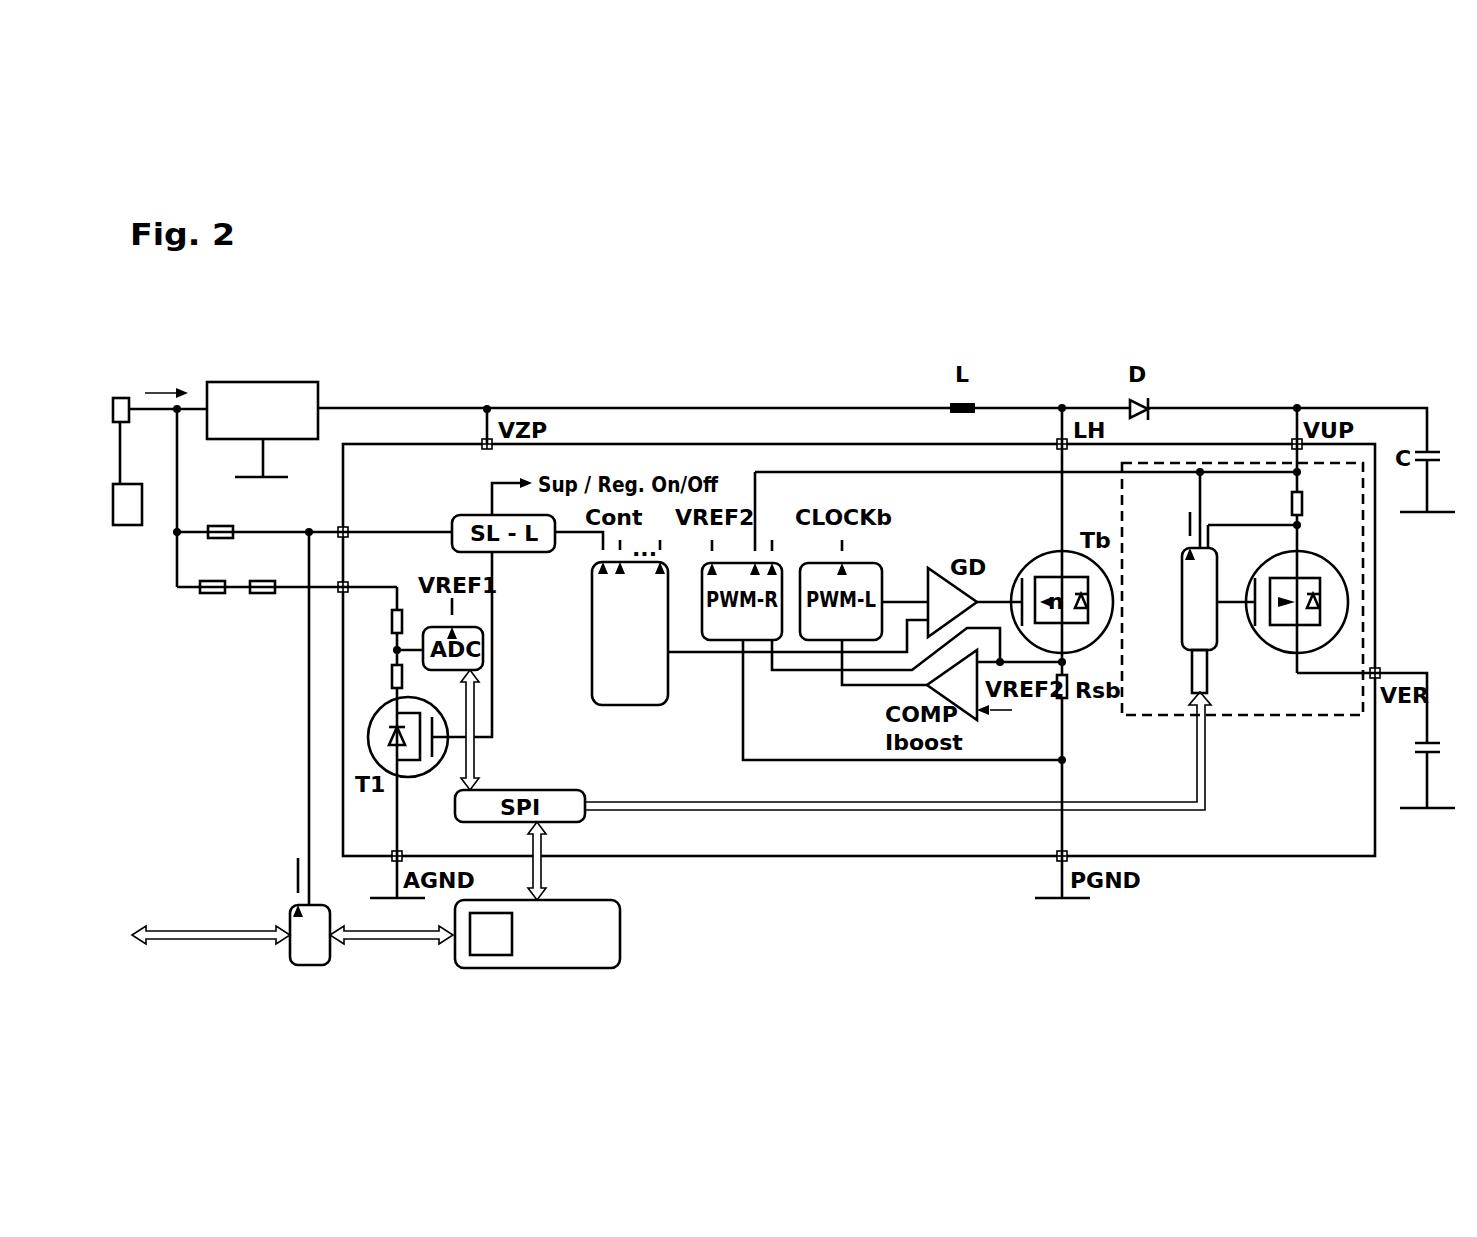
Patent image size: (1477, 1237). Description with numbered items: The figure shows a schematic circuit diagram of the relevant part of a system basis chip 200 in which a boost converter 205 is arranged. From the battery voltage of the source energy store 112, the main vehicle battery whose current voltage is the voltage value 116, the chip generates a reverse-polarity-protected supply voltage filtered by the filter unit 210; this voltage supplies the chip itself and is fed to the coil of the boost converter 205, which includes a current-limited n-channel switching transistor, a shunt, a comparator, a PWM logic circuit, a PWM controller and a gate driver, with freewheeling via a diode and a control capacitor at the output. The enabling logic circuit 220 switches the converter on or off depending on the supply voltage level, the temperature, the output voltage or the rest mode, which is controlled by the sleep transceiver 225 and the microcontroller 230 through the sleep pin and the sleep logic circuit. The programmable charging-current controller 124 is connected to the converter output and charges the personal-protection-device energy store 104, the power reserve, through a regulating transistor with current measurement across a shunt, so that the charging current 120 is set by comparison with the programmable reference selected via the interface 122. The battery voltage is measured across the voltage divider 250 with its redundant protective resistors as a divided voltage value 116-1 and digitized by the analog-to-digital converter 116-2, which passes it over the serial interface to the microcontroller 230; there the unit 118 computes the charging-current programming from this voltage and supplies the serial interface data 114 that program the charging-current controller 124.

The filter unit 210 is at (298, 382).
The voltage value 116 is at (143, 413).
The source energy store 112 is at (128, 528).
The voltage divider 250 is at (360, 653).
The divided voltage value 116-1 is at (414, 647).
The measuring circuit ADC part 116-2 is at (476, 760).
The enabling logic circuit 220 is at (638, 706).
The sleep transceiver 225 is at (288, 958).
The unit 118 is at (470, 942).
The SPI data 114 is at (546, 880).
The microcontroller 230 is at (621, 935).
The system basis chip 200 is at (1215, 857).
The charging-current controller 124 is at (1185, 463).
The interface 122 is at (1206, 776).
The charging current 120 is at (1343, 674).
The personal-protection-device energy store 104 is at (1438, 740).
The boost converter 205 is at (1322, 272).